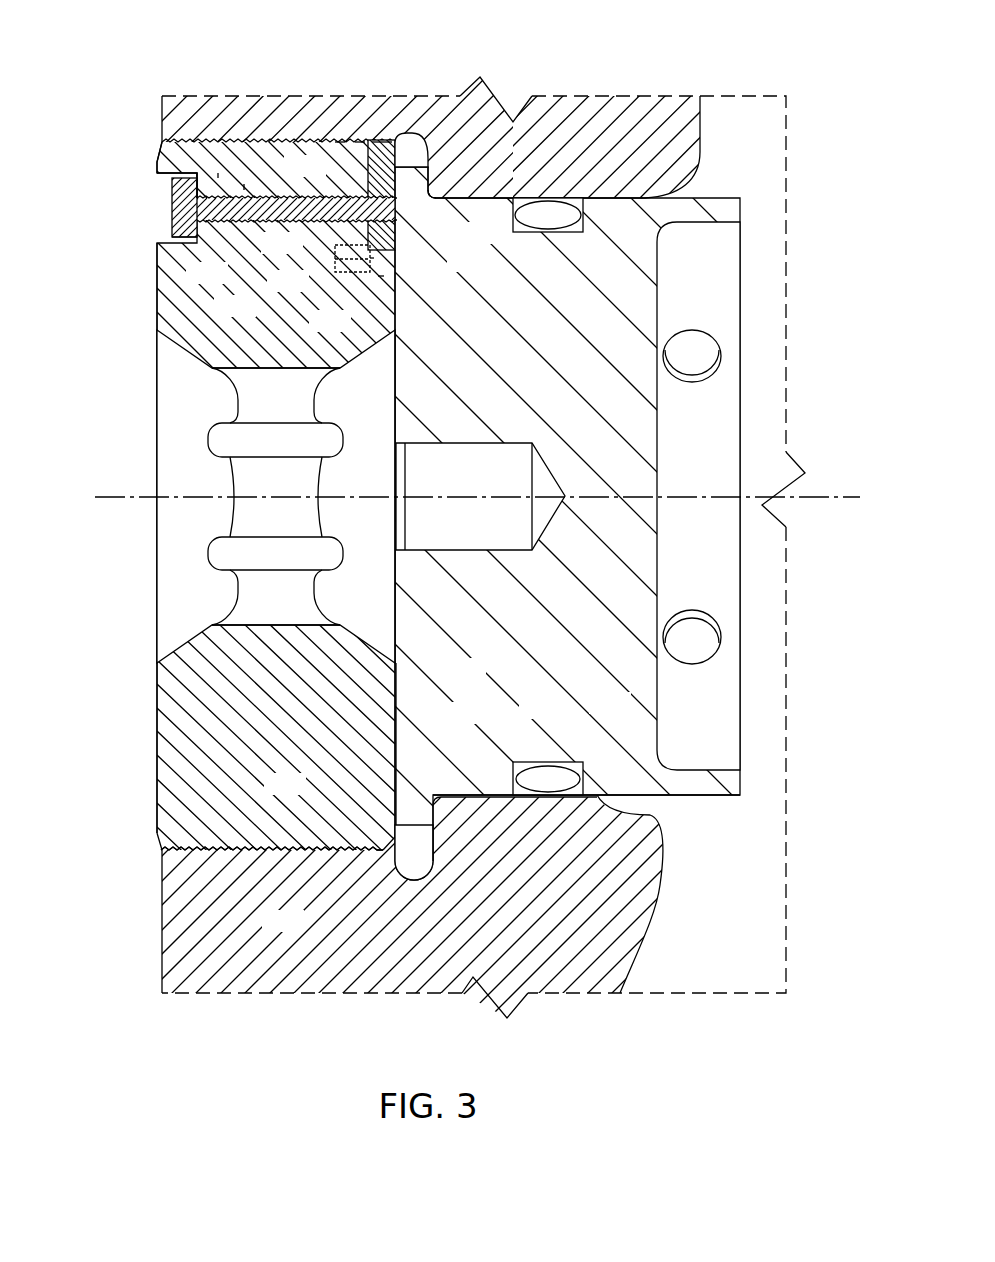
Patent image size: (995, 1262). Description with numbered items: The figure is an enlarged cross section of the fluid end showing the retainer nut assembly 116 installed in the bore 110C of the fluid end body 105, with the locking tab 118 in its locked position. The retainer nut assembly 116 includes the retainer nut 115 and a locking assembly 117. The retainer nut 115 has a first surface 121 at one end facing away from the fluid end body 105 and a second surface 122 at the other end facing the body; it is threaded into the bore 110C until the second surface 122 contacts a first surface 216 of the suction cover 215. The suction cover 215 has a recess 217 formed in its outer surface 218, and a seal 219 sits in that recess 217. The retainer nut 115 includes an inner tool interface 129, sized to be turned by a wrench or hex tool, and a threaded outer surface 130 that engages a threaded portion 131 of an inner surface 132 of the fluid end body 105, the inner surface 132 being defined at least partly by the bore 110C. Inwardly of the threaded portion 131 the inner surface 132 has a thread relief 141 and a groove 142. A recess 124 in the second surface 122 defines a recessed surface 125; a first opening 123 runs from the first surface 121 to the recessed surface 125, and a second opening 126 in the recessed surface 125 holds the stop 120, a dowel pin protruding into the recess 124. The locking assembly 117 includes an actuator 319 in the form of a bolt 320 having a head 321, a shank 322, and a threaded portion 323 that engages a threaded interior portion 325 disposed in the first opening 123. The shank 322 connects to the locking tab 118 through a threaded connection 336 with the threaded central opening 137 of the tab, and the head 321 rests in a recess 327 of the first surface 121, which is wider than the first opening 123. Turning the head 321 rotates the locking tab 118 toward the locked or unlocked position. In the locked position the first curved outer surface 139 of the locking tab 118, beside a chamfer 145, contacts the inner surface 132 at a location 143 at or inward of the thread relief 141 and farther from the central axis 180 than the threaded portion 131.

The fluid end body 105 is at (440, 894).
The bore 110C is at (660, 824).
The retainer nut 115 is at (210, 782).
The retainer nut assembly 116 is at (83, 371).
The locking assembly 117 is at (230, 198).
The locking tab 118 is at (517, 587).
The stop 120 is at (372, 262).
The first surface 121 is at (157, 730).
The second surface 122 is at (386, 740).
The first opening 123 is at (222, 176).
The recess 124 is at (380, 280).
The recessed surface 125 is at (340, 143).
The second opening 126 is at (335, 248).
The inner tool interface 129 is at (200, 527).
The threaded outer surface 130 is at (268, 848).
The threaded portion 131 is at (287, 852).
The inner surface 132 is at (468, 197).
The central opening 137 is at (372, 185).
The first curved outer surface 139 is at (437, 189).
The thread relief 141 is at (377, 124).
The groove 142 is at (427, 133).
The location 143 is at (378, 140).
The chamfer 145 is at (358, 143).
The central axis 180 is at (855, 494).
The suction cover 215 is at (610, 253).
The first surface 216 is at (397, 692).
The recess 217 is at (578, 797).
The outer surface 218 is at (580, 776).
The seal 219 is at (548, 766).
The actuator 319 is at (169, 206).
The bolt 320 is at (205, 170).
The head 321 is at (172, 225).
The shank 322 is at (246, 187).
The threaded portion 323 is at (209, 187).
The threaded interior portion 325 is at (243, 141).
The recess 327 is at (157, 163).
The threaded connection 336 is at (393, 250).